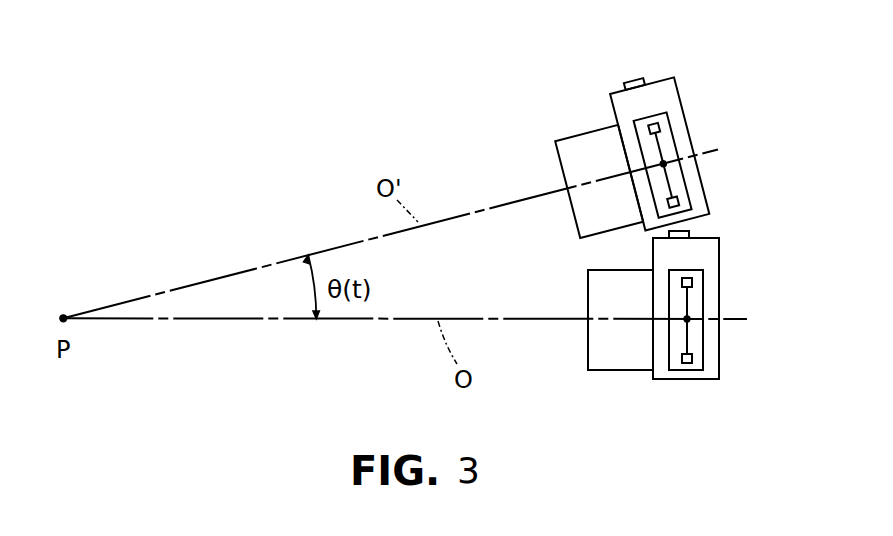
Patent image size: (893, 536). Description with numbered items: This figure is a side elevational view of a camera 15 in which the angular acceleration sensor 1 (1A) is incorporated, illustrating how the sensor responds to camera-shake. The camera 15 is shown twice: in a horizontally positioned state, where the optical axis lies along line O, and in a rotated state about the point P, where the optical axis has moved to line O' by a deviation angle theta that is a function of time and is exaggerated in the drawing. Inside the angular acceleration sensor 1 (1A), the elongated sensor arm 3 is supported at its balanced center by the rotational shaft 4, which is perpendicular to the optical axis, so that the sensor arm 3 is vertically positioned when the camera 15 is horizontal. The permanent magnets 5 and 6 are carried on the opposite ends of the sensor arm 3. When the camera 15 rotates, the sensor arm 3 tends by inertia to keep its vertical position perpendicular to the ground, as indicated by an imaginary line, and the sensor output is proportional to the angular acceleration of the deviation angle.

The angular acceleration sensor 1 is at (699, 268).
The angular acceleration sensor 1A is at (727, 190).
The camera 15 is at (719, 364).
The sensor arm 3 is at (688, 297).
The rotational shaft 4 is at (688, 318).
The permanent magnet 5 is at (682, 285).
The permanent magnet 6 is at (687, 380).